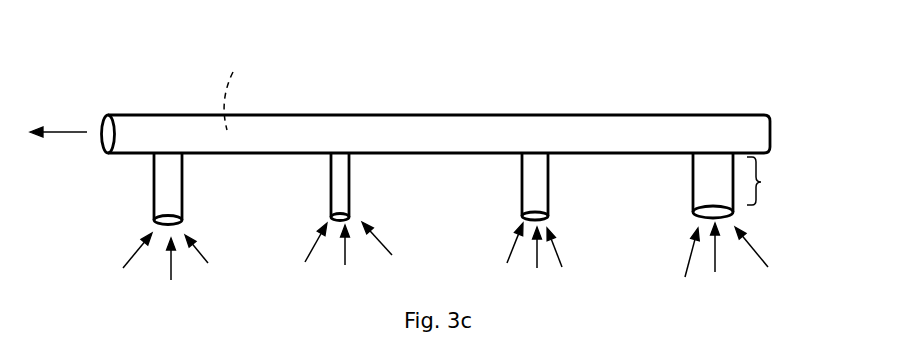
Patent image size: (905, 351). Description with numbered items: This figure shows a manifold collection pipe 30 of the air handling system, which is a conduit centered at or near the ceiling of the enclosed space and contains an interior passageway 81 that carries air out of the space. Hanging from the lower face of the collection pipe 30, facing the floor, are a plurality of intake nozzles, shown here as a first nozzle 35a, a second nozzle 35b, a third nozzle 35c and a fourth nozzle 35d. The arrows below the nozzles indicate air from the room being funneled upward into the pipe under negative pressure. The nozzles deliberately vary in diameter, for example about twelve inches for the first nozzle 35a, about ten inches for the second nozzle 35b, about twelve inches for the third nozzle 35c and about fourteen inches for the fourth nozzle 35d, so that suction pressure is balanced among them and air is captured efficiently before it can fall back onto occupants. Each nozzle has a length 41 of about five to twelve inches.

The manifold collection pipe 30 is at (806, 96).
The interior passageway 81 is at (239, 83).
The first nozzle 35a is at (167, 195).
The second nozzle 35b is at (337, 187).
The third nozzle 35c is at (528, 182).
The fourth nozzle 35d is at (710, 182).
The nozzle length 41 is at (781, 181).